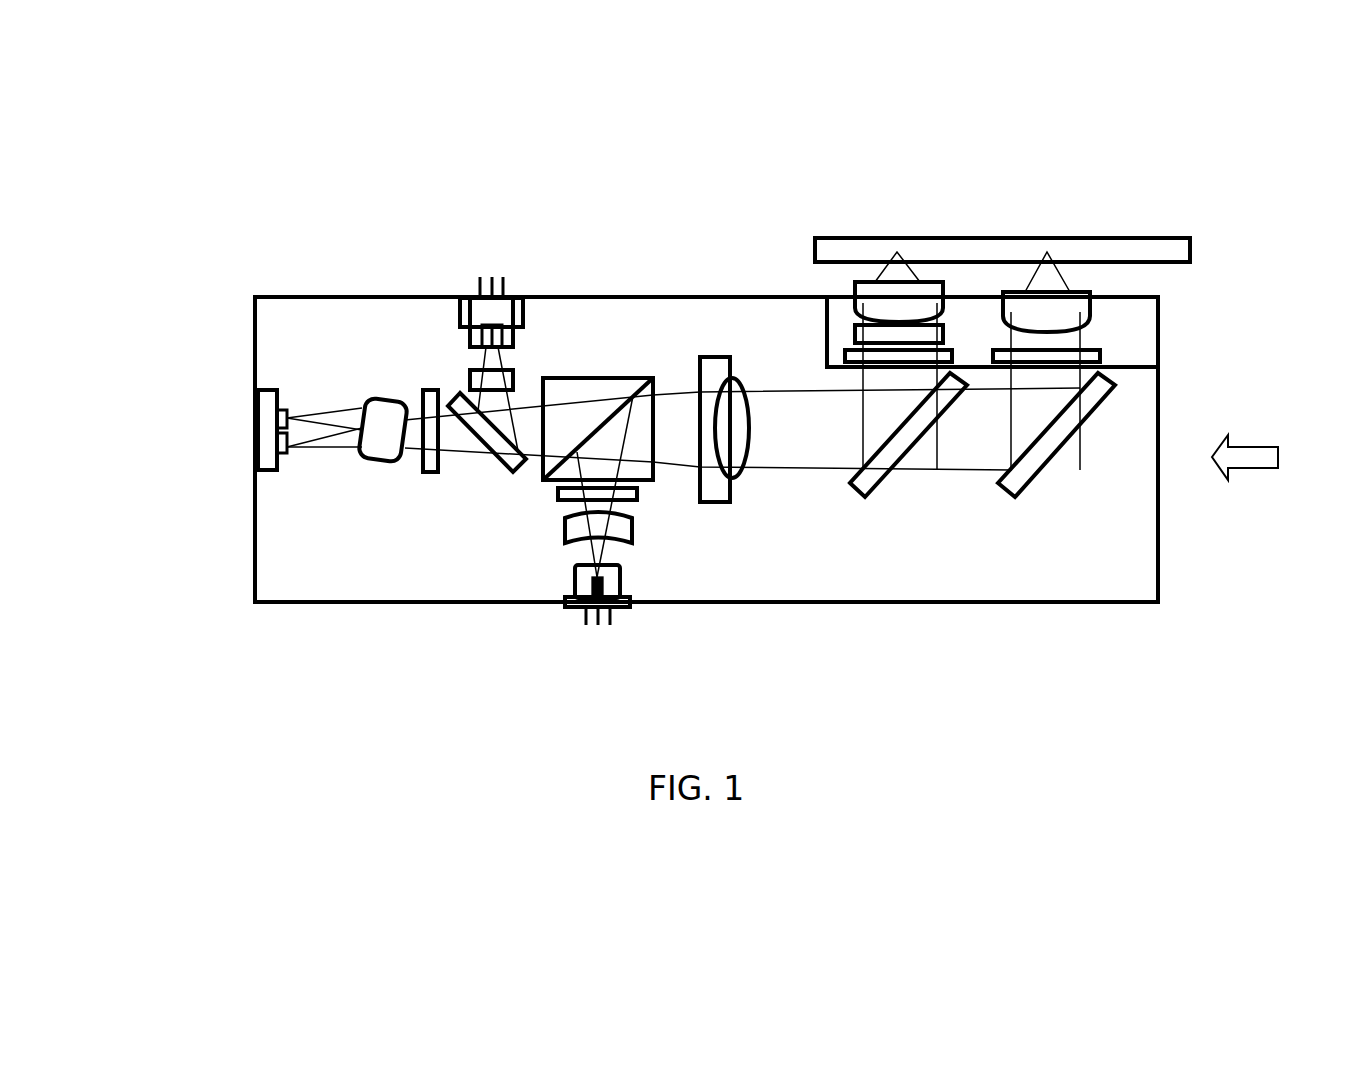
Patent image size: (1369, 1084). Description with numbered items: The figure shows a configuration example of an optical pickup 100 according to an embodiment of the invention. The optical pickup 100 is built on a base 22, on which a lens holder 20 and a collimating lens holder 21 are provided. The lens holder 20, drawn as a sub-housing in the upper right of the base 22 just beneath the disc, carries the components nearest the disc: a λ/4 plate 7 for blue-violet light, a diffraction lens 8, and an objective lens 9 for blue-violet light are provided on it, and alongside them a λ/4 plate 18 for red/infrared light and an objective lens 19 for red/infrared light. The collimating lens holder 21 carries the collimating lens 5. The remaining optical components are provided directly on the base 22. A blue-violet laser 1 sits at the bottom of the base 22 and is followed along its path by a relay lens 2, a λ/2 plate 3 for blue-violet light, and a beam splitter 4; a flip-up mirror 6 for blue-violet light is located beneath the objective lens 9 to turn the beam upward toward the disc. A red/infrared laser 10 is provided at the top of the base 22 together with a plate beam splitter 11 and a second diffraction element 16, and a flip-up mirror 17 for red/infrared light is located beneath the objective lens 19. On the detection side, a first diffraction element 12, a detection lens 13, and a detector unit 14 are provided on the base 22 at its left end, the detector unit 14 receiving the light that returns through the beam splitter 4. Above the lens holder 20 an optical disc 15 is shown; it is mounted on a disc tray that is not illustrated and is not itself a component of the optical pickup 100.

The blue-violet laser 1 is at (613, 580).
The relay lens 2 is at (623, 530).
The λ/2 plate for blue-violet light 3 is at (558, 502).
The beam splitter 4 is at (562, 395).
The collimating lens 5 is at (733, 452).
The flip-up mirror for blue-violet light 6 is at (893, 453).
The λ/4 plate for blue-violet light 7 is at (852, 353).
The diffraction lens 8 is at (860, 332).
The objective lens for blue-violet light 9 is at (868, 292).
The red/infrared laser 10 is at (500, 313).
The plate beam splitter 11 is at (463, 400).
The first diffraction element 12 is at (433, 403).
The detection lens 13 is at (370, 450).
The detector unit 14 is at (267, 457).
The optical disc 15 is at (847, 252).
The second diffraction element 16 is at (510, 377).
The flip-up mirror for red/infrared light 17 is at (1063, 437).
The λ/4 plate for red/infrared light 18 is at (1100, 352).
The objective lens for red/infrared light 19 is at (1072, 308).
The lens holder 20 is at (1145, 355).
The collimating lens holder 21 is at (720, 492).
The base 22 is at (1110, 570).
The optical pickup 100 is at (1280, 457).